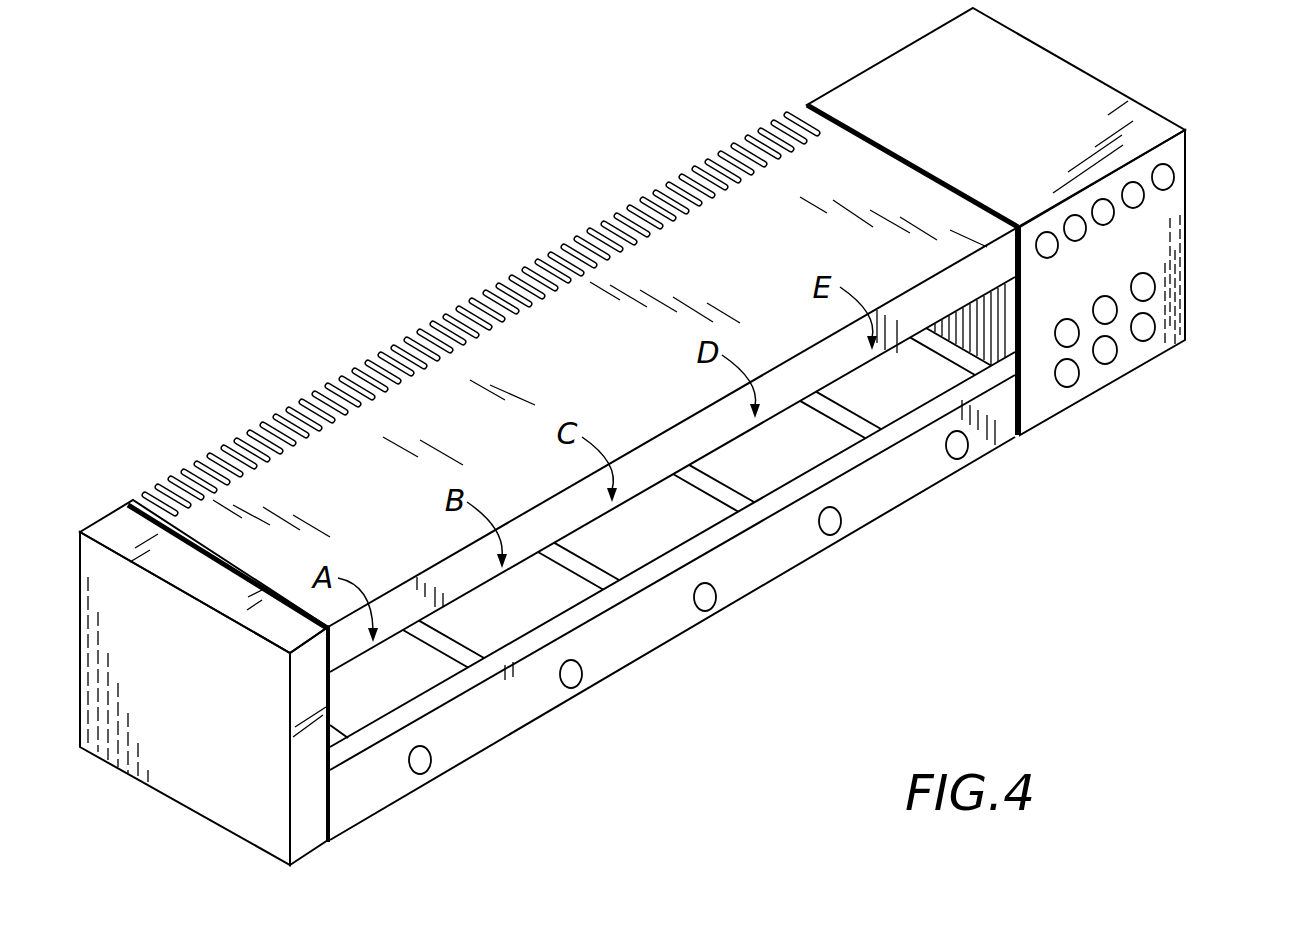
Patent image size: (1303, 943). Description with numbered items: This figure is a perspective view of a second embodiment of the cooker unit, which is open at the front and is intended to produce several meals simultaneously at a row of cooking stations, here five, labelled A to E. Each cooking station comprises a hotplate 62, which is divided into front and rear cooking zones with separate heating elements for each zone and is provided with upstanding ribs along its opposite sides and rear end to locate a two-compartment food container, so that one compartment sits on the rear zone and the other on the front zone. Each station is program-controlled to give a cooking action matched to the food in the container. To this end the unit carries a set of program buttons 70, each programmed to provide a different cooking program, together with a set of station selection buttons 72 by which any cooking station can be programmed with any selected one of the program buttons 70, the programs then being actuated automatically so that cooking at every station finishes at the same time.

The hotplate 62 is at (400, 683).
The program buttons 70 is at (1115, 327).
The station selection buttons 72 is at (1177, 170).